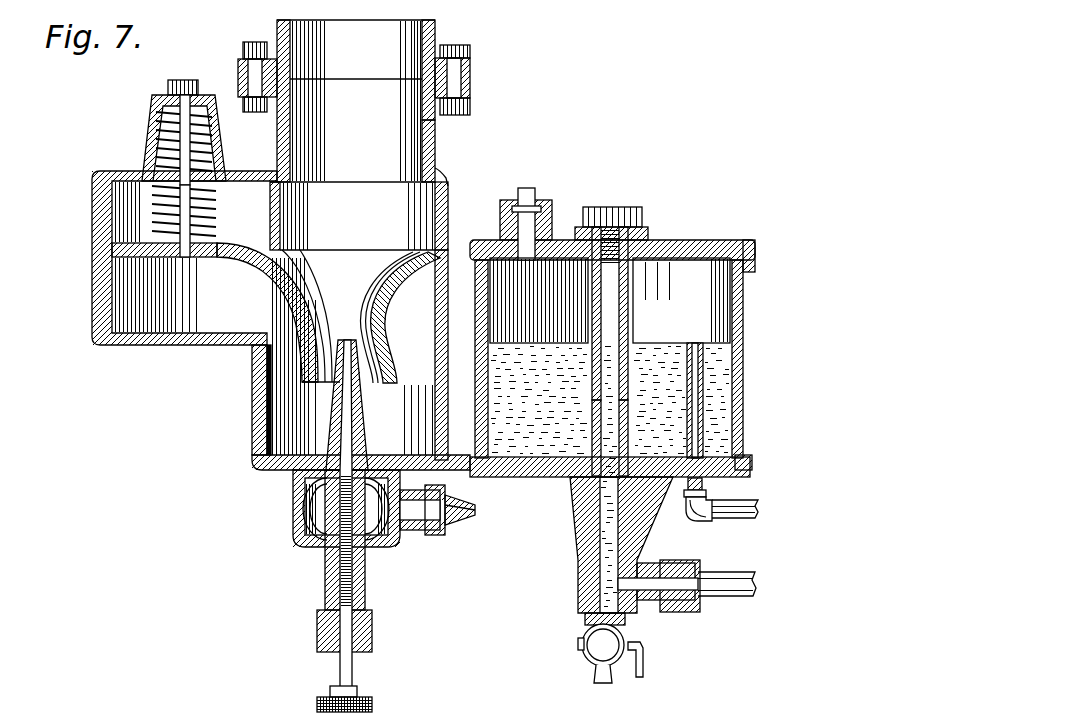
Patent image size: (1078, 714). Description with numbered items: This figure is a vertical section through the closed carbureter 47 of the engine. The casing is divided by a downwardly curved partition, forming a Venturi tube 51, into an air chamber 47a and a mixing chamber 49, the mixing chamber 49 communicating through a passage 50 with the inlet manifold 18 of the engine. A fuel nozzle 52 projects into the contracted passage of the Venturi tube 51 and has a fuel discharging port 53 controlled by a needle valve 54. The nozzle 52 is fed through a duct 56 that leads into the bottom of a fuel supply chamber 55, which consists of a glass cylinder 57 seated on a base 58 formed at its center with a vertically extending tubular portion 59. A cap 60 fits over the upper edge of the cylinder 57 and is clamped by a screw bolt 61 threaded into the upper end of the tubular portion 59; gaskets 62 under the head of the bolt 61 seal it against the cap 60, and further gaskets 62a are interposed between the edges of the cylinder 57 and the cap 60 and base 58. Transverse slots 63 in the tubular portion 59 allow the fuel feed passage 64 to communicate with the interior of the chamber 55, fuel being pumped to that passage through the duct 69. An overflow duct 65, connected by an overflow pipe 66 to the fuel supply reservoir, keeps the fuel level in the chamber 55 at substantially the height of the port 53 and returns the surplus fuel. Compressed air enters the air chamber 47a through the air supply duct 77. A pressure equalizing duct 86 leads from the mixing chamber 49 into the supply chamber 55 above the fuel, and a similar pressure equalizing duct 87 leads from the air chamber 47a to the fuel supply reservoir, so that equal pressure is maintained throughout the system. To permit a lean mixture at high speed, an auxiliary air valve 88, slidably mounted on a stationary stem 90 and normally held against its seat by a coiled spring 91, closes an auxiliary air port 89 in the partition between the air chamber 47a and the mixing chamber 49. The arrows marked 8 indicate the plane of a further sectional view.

The inlet manifold 18 is at (412, 37).
The passage 50 is at (435, 144).
The mixing chamber 49 is at (427, 207).
The closed carbureter 47 is at (253, 398).
The air chamber 47a is at (268, 437).
The Venturi tube 51 is at (314, 360).
The fuel discharging port 53 is at (349, 336).
The fuel nozzle 52 is at (360, 424).
The needle valve 54 is at (352, 590).
The duct 56 is at (468, 462).
The base 58 is at (567, 464).
The air supply duct 77 is at (313, 512).
The pressure equalizing duct 87 is at (450, 524).
The section line 8 is at (250, 355).
The auxiliary air valve 88 is at (213, 243).
The auxiliary air port 89 is at (220, 246).
The stationary stem 90 is at (178, 202).
The coiled spring 91 is at (166, 163).
The cap 60 is at (562, 245).
The pressure equalizing duct 86 is at (530, 200).
The screw bolt 61 is at (611, 218).
The gaskets 62 is at (645, 236).
The gaskets 62a is at (743, 252).
The fuel supply chamber 55 is at (676, 276).
The glass cylinder 57 is at (745, 318).
The tubular portion 59 is at (632, 338).
The transverse slots 63 is at (593, 433).
The overflow duct 65 is at (702, 386).
The overflow pipe 66 is at (740, 513).
The fuel feed passage 64 is at (600, 556).
The duct 69 is at (733, 590).